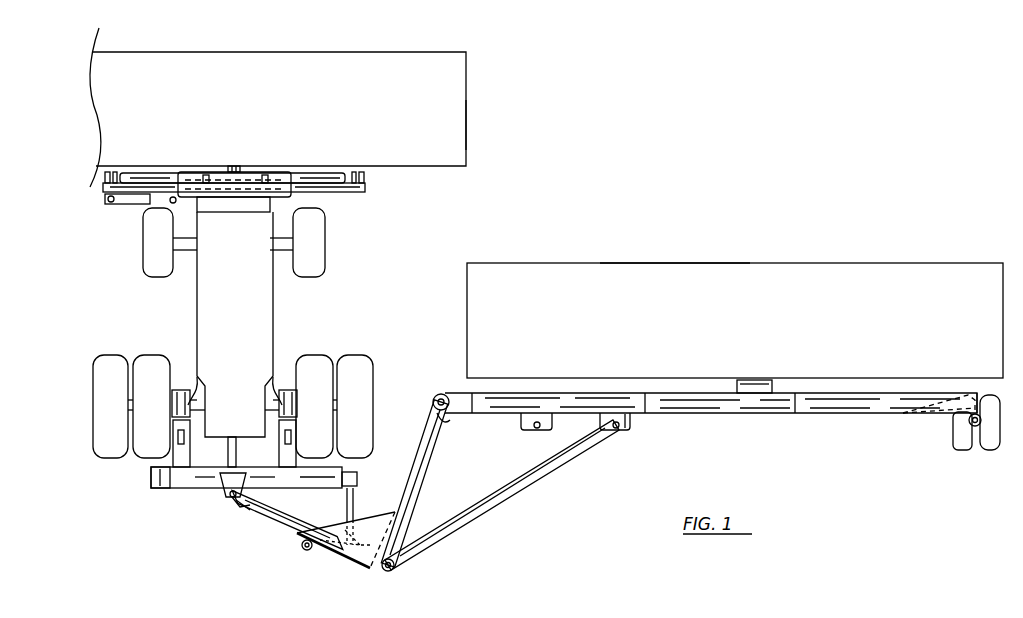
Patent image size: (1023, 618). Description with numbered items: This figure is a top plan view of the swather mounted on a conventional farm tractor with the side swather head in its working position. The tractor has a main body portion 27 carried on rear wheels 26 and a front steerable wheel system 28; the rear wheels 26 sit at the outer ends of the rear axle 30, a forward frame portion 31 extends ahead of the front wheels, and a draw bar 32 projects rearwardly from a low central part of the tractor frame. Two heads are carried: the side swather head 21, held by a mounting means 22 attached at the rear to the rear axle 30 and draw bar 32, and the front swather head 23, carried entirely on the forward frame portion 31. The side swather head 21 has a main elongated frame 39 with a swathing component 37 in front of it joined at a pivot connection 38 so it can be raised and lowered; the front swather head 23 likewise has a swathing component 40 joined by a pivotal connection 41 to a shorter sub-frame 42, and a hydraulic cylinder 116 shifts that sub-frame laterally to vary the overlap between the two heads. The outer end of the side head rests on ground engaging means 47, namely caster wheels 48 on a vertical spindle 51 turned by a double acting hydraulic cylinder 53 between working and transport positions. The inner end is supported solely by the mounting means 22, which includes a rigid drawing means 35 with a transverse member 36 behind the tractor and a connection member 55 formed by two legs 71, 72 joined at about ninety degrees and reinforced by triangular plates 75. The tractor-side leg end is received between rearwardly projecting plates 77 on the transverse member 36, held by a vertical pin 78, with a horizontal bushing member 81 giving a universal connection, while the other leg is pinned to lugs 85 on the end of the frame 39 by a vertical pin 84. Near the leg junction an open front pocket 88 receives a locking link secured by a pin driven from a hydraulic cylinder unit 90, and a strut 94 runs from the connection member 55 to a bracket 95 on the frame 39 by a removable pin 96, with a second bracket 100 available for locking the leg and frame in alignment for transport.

The side swather head 21 is at (832, 262).
The mounting means 22 is at (500, 522).
The front swather head 23 is at (470, 122).
The rear wheels 26 is at (147, 360).
The main body portion 27 is at (259, 292).
The front steerable wheel system 28 is at (328, 256).
The rear axle 30 is at (185, 398).
The forward frame portion 31 is at (262, 204).
The draw bar 32 is at (236, 452).
The rigid drawing means 35 is at (150, 482).
The transverse member 36 is at (160, 488).
The swathing component 37 is at (670, 275).
The pivot connection 38 is at (785, 393).
The main elongated frame 39 is at (840, 414).
The swathing component 40 is at (402, 56).
The connection 41 is at (240, 168).
The sub-frame 42 is at (365, 188).
The ground engaging means 47 is at (962, 462).
The caster wheels 48 is at (985, 450).
The vertical spindle 51 is at (960, 440).
The hydraulic double acting cylinder 53 is at (905, 415).
The connection member 55 is at (395, 574).
The leg 71 is at (280, 520).
The leg 72 is at (418, 480).
The triangular plates 75 is at (365, 515).
The vertical spaced lugs or plates 77 is at (224, 490).
The vertical pin 78 is at (250, 515).
The horizontal bushing member 81 is at (243, 508).
The vertical pin 84 is at (436, 396).
The vertical spaced lugs 85 is at (448, 424).
The open front pocket 88 is at (360, 570).
The hydraulic cylinder unit 90 is at (310, 548).
The strut 94 is at (532, 478).
The bracket 95 is at (628, 428).
The removable pin 96 is at (617, 430).
The second bracket 100 is at (535, 428).
The hydraulic cylinder 116 is at (138, 204).